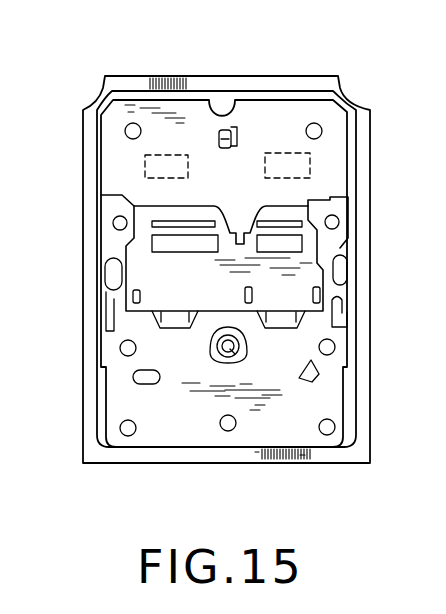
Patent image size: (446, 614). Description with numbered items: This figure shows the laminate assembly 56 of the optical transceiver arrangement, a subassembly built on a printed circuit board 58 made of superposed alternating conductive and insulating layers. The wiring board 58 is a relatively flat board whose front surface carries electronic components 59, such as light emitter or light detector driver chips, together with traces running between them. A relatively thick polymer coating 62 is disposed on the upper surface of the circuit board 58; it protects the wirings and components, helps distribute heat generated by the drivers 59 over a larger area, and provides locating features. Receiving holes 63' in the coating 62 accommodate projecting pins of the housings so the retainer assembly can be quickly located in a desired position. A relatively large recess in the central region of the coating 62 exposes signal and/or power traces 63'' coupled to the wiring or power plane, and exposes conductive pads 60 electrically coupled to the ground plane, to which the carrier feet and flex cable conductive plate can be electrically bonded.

The laminate assembly 56 is at (376, 253).
The printed circuit board 58 is at (365, 450).
The electronic components 59 is at (218, 136).
The conductive pads 60 is at (302, 243).
The polymer coating 62 is at (330, 395).
The receiving holes 63' is at (235, 437).
The signal and/or power traces 63'' is at (293, 202).